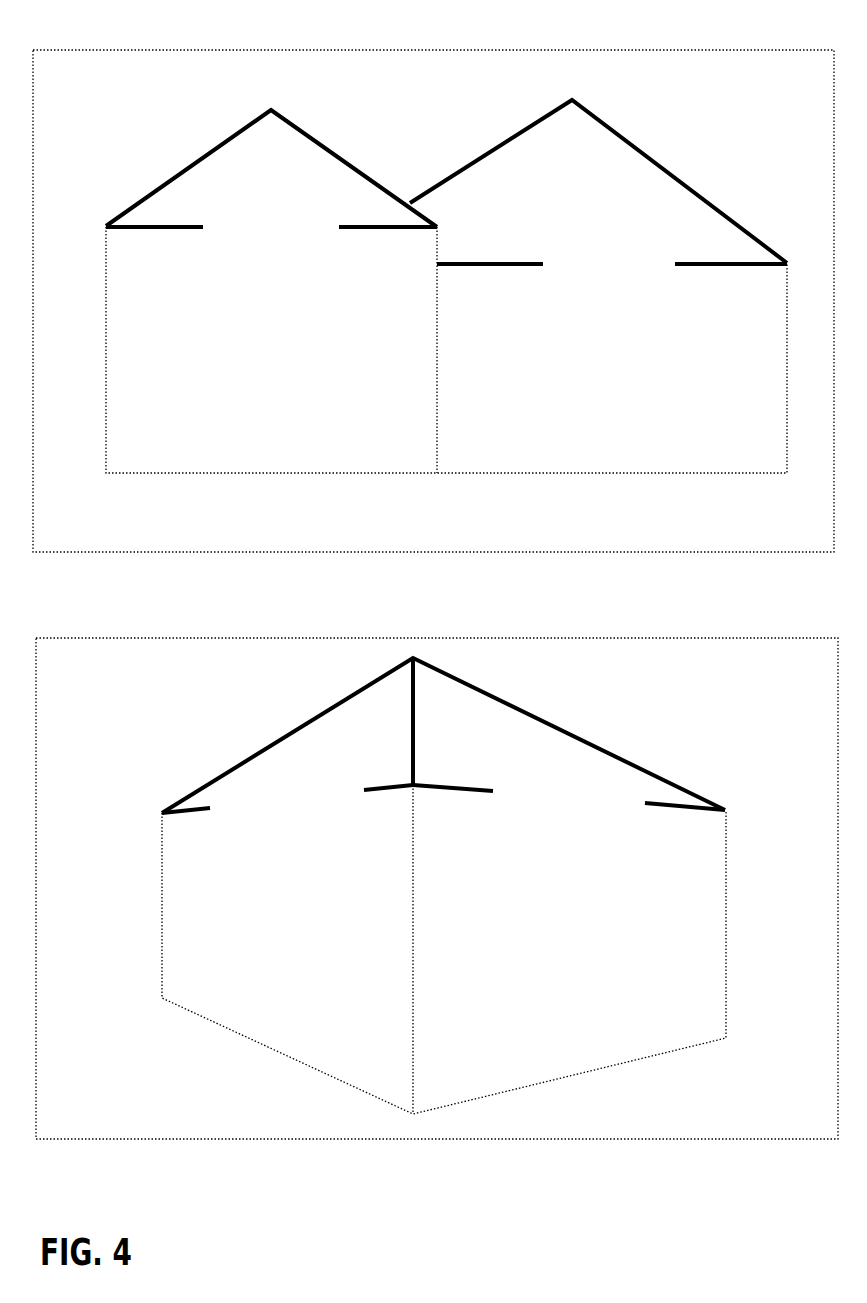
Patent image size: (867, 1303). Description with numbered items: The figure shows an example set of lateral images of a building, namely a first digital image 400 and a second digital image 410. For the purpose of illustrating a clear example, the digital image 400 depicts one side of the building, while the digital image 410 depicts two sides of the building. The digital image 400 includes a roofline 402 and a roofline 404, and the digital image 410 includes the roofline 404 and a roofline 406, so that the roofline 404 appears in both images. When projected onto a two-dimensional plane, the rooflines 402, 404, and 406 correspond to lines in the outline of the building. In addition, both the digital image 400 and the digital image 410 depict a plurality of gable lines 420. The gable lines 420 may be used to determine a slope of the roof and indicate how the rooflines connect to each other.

The digital image 400 is at (433, 320).
The roofline 402 is at (271, 226).
The roofline 404 is at (474, 534).
The roofline 406 is at (569, 799).
The digital image 410 is at (437, 907).
The gable lines 420 is at (363, 154).